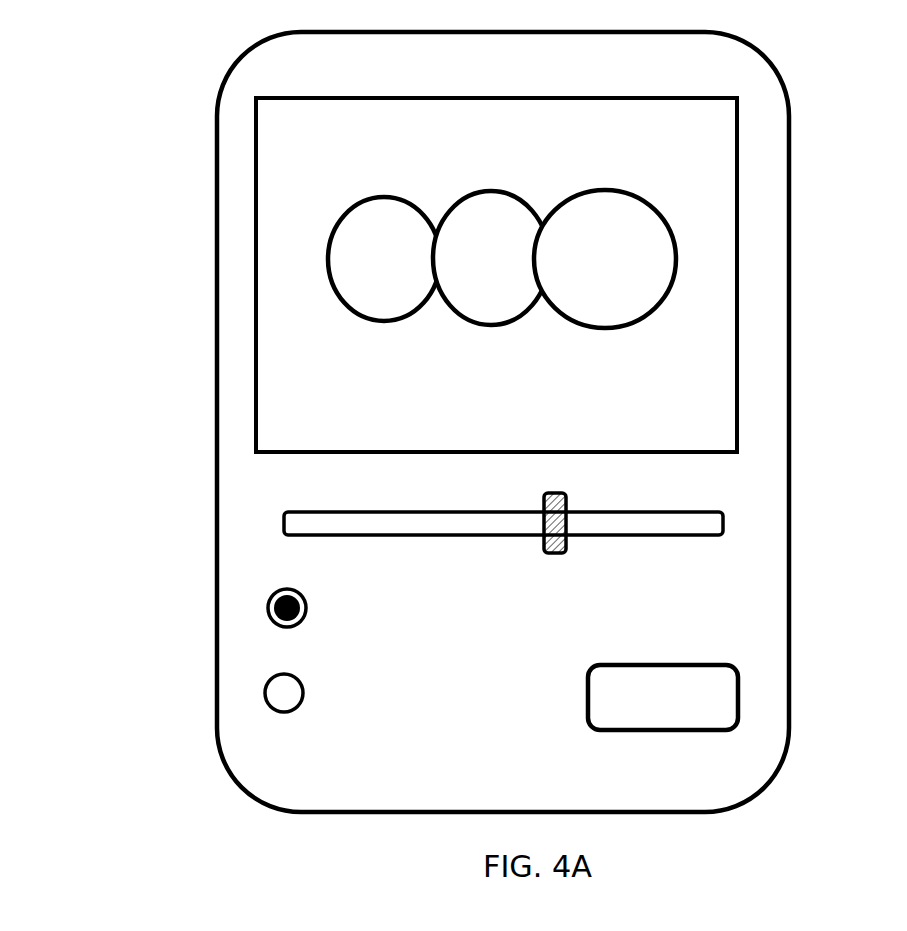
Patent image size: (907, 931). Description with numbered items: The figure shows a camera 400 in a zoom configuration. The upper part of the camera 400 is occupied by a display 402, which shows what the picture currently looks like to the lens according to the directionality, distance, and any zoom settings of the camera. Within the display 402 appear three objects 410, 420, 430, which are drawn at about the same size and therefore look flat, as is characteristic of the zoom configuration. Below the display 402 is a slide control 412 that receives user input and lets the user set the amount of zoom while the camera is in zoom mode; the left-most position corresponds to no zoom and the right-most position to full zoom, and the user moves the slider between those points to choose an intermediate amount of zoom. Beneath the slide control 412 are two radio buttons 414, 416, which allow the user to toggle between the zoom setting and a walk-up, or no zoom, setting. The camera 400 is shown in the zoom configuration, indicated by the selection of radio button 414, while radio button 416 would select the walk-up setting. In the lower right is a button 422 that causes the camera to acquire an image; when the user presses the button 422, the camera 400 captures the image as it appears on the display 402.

The camera 400 is at (821, 74).
The display 402 is at (507, 93).
The object 410 is at (345, 213).
The slide control 412 is at (546, 497).
The radio button 414 is at (260, 605).
The radio button 416 is at (267, 695).
The object 420 is at (465, 200).
The button 422 is at (705, 682).
The object 430 is at (570, 210).